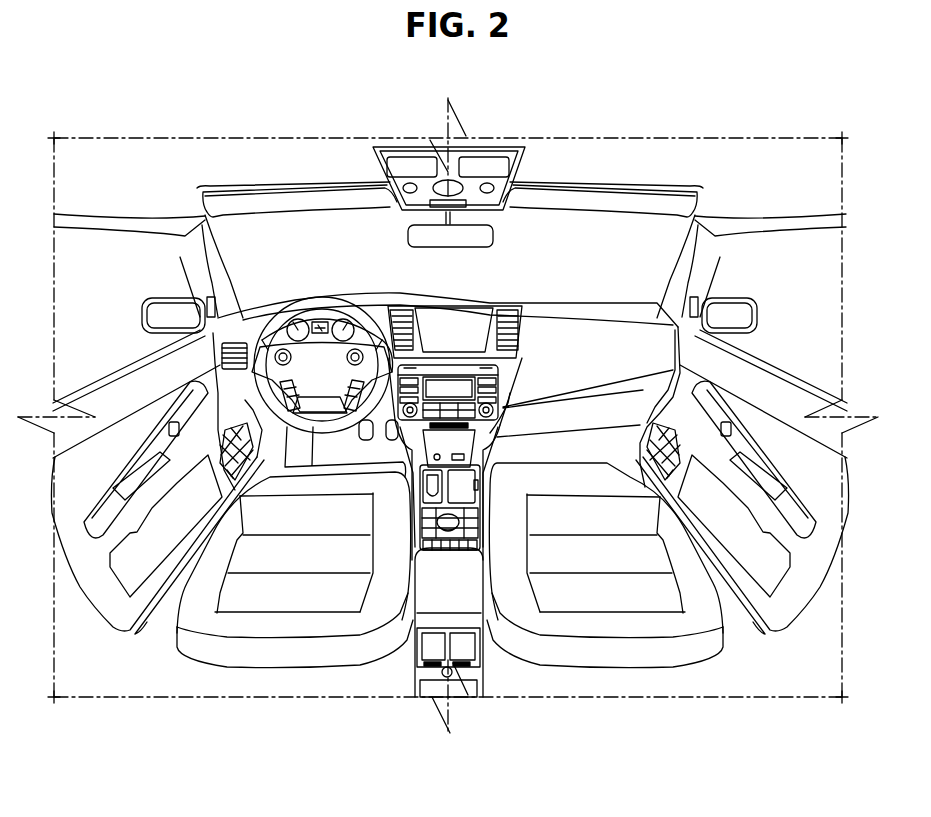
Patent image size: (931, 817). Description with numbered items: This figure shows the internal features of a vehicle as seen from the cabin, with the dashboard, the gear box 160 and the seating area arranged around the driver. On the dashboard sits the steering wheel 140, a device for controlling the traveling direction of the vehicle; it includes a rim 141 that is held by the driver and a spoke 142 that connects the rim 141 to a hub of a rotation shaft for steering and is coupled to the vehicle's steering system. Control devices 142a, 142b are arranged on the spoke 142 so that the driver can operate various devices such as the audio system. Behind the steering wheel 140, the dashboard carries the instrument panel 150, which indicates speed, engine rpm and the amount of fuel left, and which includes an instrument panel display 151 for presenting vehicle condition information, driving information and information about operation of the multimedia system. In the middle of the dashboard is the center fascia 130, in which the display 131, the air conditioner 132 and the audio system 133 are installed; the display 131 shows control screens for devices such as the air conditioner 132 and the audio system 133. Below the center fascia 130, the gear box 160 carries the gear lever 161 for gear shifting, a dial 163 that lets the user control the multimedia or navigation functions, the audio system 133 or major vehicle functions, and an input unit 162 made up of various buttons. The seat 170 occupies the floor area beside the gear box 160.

The center fascia 130 is at (533, 287).
The display 131 is at (457, 317).
The air conditioner 132 is at (517, 330).
The audio system 133 is at (500, 375).
The steering wheel 140 is at (335, 328).
The rim 141 is at (295, 300).
The spoke 142 is at (217, 365).
The control device 142a is at (268, 320).
The control device 142b is at (373, 317).
The instrument panel 150 is at (318, 318).
The instrument panel display 151 is at (347, 300).
The gear box 160 is at (453, 581).
The gear lever 161 is at (418, 482).
The input unit 162 is at (463, 521).
The dial 163 is at (438, 522).
The seat 170 is at (297, 652).